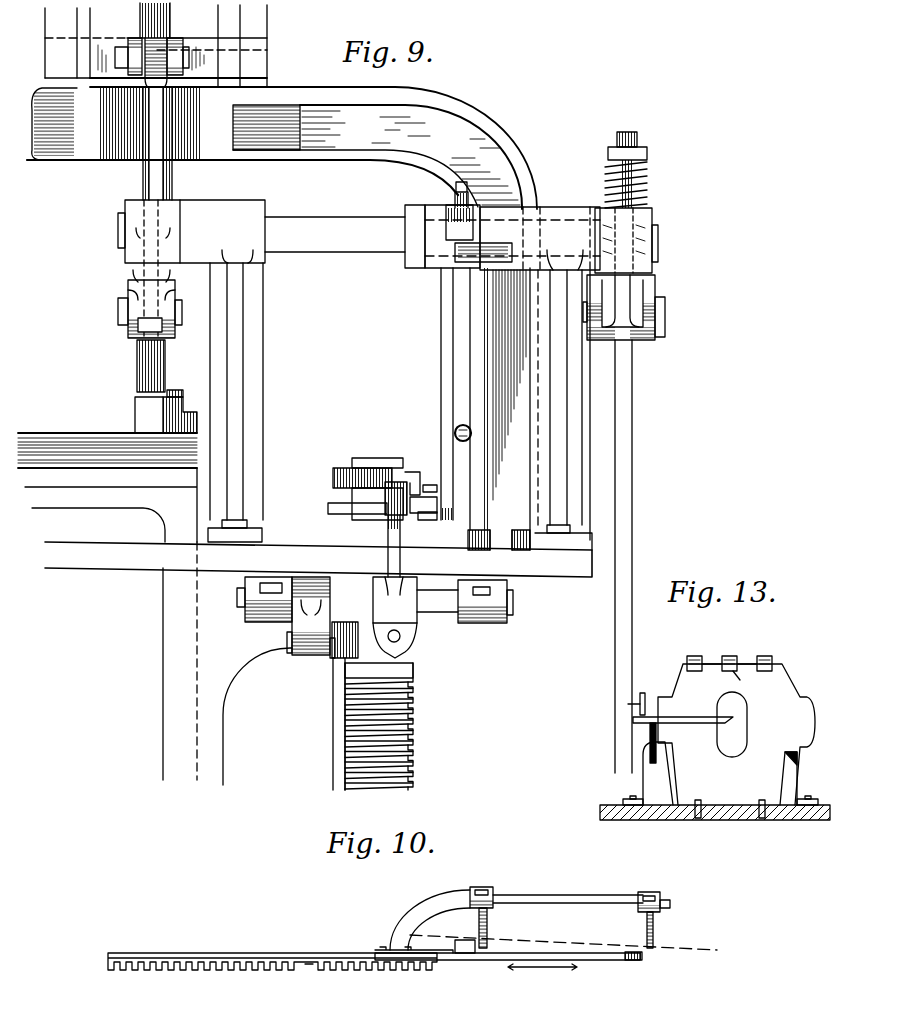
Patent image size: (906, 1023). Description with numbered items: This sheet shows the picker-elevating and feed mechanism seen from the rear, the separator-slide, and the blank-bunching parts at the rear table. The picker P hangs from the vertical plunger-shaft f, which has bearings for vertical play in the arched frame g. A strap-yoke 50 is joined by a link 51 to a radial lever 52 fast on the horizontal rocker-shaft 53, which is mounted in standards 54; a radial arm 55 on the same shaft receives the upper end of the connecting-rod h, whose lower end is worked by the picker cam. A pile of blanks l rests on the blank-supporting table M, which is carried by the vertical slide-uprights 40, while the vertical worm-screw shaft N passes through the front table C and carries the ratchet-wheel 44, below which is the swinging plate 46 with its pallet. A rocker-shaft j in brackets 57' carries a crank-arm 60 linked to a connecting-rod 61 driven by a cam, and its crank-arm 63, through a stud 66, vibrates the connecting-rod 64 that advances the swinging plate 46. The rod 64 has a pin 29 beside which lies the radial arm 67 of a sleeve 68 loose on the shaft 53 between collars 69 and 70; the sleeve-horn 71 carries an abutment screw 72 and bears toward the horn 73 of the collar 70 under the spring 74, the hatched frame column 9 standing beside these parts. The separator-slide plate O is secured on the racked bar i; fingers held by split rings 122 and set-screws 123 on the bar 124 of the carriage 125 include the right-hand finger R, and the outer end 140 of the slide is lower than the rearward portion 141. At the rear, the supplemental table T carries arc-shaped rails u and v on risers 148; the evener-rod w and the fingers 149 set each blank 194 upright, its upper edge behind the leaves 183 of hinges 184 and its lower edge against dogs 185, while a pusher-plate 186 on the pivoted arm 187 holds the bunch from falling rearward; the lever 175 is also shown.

In FIG. 9, the hatched frame column 9 is at (499, 409).
In FIG. 9, the arched frame g is at (282, 148).
In FIG. 9, the vertical plunger-shaft f is at (172, 22).
In FIG. 9, the strap-yoke 50 is at (131, 38).
In FIG. 9, the link 51 is at (150, 118).
In FIG. 9, the radial lever 52 is at (163, 272).
In FIG. 9, the rocker-shaft 53 is at (665, 242).
In FIG. 9, the standards 54 is at (355, 375).
In FIG. 9, the radial arm 55 is at (628, 284).
In FIG. 9, the radial arm 67 is at (440, 392).
In FIG. 9, the sleeve 68 is at (512, 236).
In FIG. 9, the collar 69 is at (415, 236).
In FIG. 9, the fixed collar 70 is at (540, 238).
In FIG. 9, the radially-extending horn 71 is at (459, 222).
In FIG. 9, the screw 72 is at (455, 190).
In FIG. 9, the radially-extending horn 73 is at (488, 256).
In FIG. 9, the spring 74 is at (461, 423).
In FIG. 9, the pin 29 is at (432, 484).
In FIG. 9, the ratchet-wheel 44 is at (333, 477).
In FIG. 9, the swinging plate 46 is at (340, 514).
In FIG. 9, the connecting-rod 64 is at (432, 502).
In FIG. 9, the stud 66 is at (385, 498).
In FIG. 9, the crank-arm 63 is at (400, 561).
In FIG. 9, the crank-arm 60 is at (311, 617).
In FIG. 9, the connecting-rod 61 is at (336, 727).
In FIG. 9, the brackets 57' is at (375, 611).
In FIG. 9, the vertical slide-uprights 40 is at (110, 525).
In FIG. 9, the pile of blanks l is at (107, 441).
In FIG. 9, the picker P is at (152, 411).
In FIG. 9, the blank-supporting table M is at (111, 505).
In FIG. 9, the front table C is at (318, 661).
In FIG. 9, the rocker-shaft j is at (415, 617).
In FIG. 9, the worm-screw shaft N is at (391, 726).
In FIG. 9, the connecting-rod h is at (632, 545).
In FIG. 13, the supplemental table T is at (715, 827).
In FIG. 13, the envelope-blank 194 is at (736, 734).
In FIG. 13, the pusher-plate 186 is at (740, 733).
In FIG. 13, the hinges 184 is at (697, 660).
In FIG. 13, the leaves 183 is at (747, 682).
In FIG. 13, the arm 187 is at (683, 713).
In FIG. 13, the evener-rod w is at (634, 700).
In FIG. 13, the lever 175 is at (647, 693).
In FIG. 13, the arc-shaped rail u is at (658, 764).
In FIG. 13, the arc-shaped rail v is at (799, 755).
In FIG. 13, the risers 148 is at (635, 792).
In FIG. 13, the vertical fingers 149 is at (812, 790).
In FIG. 13, the dogs 185 is at (696, 818).
In FIG. 10, the racked bar i is at (272, 977).
In FIG. 10, the separator-slide plate O is at (507, 967).
In FIG. 10, the carriage 125 is at (430, 917).
In FIG. 10, the bar 124 is at (563, 915).
In FIG. 10, the split and lugged ring 122 is at (490, 880).
In FIG. 10, the set-screw 123 is at (493, 893).
In FIG. 10, the right-hand finger R is at (582, 925).
In FIG. 10, the rearward portion 141 is at (465, 958).
In FIG. 10, the outer end 140 is at (635, 960).